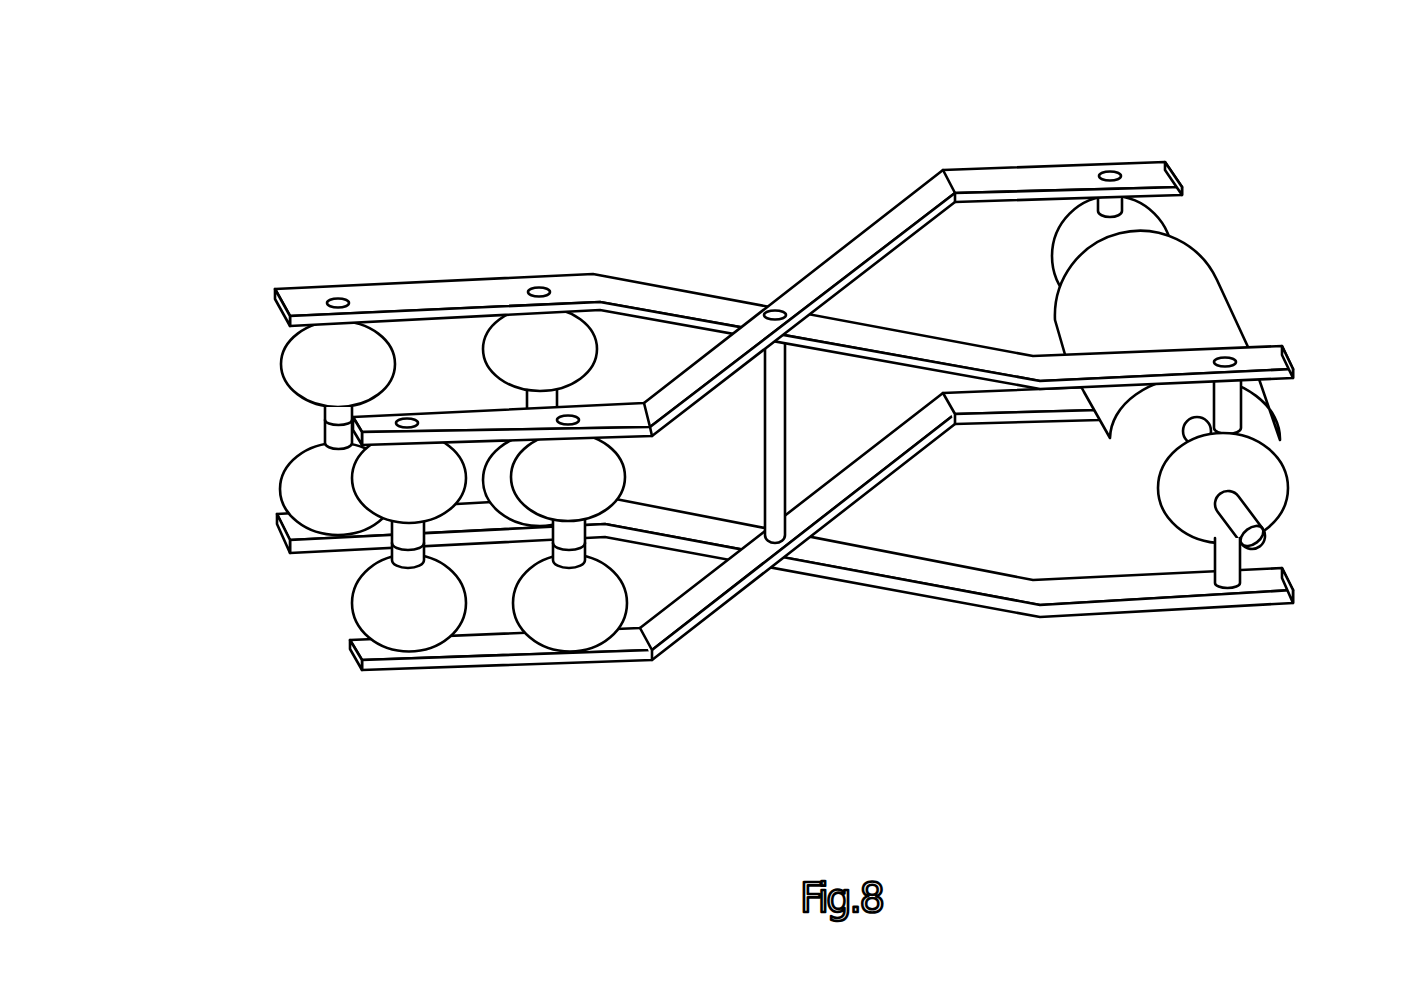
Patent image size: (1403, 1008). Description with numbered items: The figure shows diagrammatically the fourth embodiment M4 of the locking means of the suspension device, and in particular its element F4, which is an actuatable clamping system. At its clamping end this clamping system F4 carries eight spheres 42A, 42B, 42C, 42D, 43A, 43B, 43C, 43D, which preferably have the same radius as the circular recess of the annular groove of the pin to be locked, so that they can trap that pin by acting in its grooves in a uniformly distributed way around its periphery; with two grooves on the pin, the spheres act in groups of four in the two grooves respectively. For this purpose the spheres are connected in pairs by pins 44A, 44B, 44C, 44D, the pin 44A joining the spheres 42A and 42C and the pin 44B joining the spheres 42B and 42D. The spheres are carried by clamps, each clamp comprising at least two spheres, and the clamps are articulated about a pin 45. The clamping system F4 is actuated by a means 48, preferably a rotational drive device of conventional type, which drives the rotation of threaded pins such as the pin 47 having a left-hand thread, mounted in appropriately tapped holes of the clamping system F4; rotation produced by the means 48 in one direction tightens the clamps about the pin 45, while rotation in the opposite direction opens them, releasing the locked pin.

The clamping system F4 is at (705, 247).
The fourth embodiment of the locking means M4 is at (758, 402).
The sphere 42A is at (308, 357).
The sphere 42B is at (368, 481).
The sphere 42C is at (313, 515).
The sphere 42D is at (363, 617).
The sphere 43A is at (562, 336).
The sphere 43B is at (588, 480).
The sphere 43C is at (488, 476).
The sphere 43D is at (561, 632).
The pin 44A is at (338, 298).
The pin 44B is at (352, 412).
The pin 44C is at (540, 288).
The pin 44D is at (575, 417).
The pin 45 is at (778, 413).
The pin 47 is at (1268, 546).
The means capable of actuating the clamping system 48 is at (1192, 290).